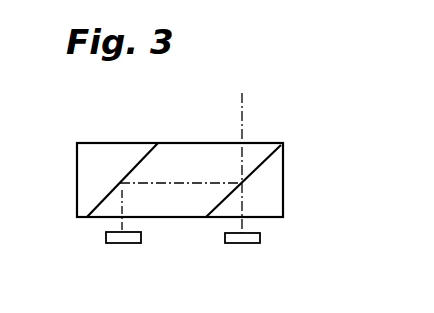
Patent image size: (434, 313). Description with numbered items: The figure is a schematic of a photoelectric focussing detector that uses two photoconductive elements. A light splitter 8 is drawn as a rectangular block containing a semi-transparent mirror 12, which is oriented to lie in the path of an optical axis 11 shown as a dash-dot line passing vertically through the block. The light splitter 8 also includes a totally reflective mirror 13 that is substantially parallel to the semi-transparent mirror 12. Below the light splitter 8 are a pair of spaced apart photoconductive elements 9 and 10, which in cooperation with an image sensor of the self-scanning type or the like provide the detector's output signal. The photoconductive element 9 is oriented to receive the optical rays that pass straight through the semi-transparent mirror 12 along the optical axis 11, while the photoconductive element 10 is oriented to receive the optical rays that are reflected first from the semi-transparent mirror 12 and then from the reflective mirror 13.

The light splitter 8 is at (272, 211).
The photoconductive element 9 is at (247, 238).
The photoconductive element 10 is at (122, 238).
The optical axis 11 is at (242, 118).
The semi-transparent mirror 12 is at (260, 162).
The totally reflective mirror 13 is at (137, 163).